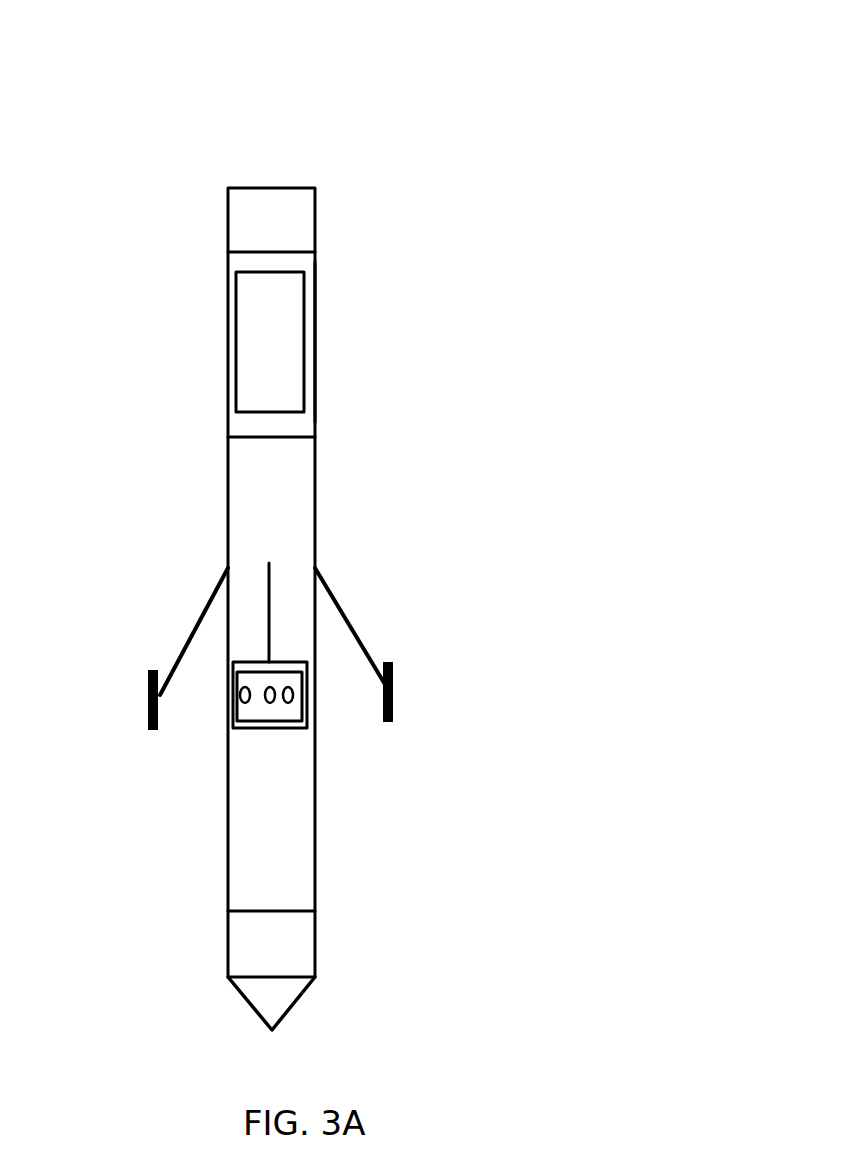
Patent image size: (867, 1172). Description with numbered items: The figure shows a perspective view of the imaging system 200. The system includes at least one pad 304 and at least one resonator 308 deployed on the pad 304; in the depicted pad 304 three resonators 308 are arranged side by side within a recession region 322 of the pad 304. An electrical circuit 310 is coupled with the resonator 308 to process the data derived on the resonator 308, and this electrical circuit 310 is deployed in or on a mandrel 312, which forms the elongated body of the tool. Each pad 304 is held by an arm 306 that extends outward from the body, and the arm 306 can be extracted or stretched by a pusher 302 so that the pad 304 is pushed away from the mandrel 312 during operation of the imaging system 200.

The imaging system 200 is at (372, 138).
The pusher 302 is at (250, 497).
The pad 304 is at (296, 683).
The arm 306 is at (274, 571).
The resonator 308 is at (270, 703).
The electrical circuit 310 is at (265, 357).
The mandrel 312 is at (315, 387).
The recession region 322 is at (258, 713).